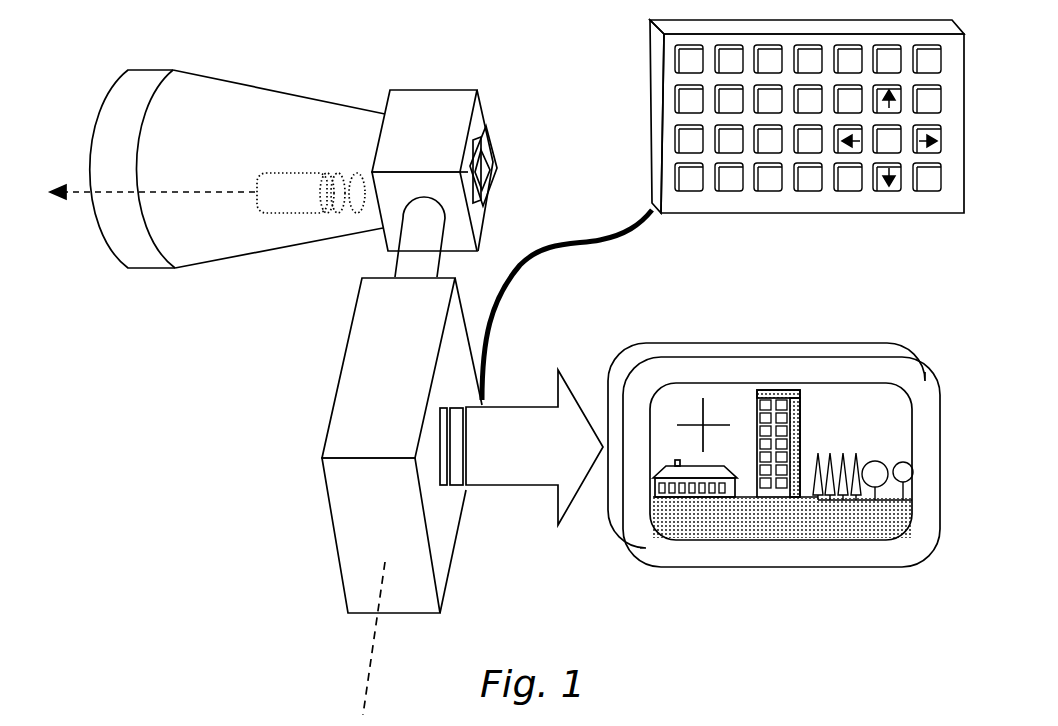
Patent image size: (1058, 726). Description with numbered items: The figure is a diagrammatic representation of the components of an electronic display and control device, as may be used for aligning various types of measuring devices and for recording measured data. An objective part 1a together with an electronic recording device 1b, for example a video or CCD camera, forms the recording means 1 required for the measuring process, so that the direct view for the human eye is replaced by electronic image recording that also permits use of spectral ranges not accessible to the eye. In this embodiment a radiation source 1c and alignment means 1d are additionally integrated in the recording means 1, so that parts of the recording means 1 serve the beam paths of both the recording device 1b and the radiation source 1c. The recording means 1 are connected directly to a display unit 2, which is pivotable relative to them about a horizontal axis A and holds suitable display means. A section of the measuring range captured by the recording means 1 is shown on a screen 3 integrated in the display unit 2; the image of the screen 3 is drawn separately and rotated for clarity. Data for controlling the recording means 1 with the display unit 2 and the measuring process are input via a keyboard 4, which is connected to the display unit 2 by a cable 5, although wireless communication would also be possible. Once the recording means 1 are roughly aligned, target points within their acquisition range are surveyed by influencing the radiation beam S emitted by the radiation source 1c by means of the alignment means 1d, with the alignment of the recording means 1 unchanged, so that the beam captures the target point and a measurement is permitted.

The recording means 1 is at (330, 229).
The objective part 1a is at (193, 237).
The electronic recording device 1b is at (480, 170).
The radiation source 1c is at (292, 193).
The alignment means 1d is at (346, 188).
The display unit 2 is at (416, 496).
The screen 3 is at (803, 588).
The keyboard 4 is at (757, 197).
The cable 5 is at (600, 243).
The radiation beam S is at (153, 218).
The horizontal axis A is at (389, 638).